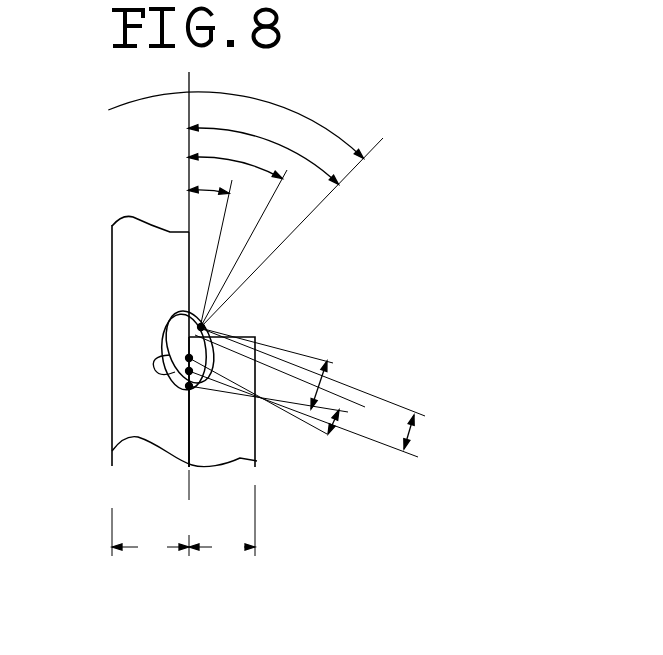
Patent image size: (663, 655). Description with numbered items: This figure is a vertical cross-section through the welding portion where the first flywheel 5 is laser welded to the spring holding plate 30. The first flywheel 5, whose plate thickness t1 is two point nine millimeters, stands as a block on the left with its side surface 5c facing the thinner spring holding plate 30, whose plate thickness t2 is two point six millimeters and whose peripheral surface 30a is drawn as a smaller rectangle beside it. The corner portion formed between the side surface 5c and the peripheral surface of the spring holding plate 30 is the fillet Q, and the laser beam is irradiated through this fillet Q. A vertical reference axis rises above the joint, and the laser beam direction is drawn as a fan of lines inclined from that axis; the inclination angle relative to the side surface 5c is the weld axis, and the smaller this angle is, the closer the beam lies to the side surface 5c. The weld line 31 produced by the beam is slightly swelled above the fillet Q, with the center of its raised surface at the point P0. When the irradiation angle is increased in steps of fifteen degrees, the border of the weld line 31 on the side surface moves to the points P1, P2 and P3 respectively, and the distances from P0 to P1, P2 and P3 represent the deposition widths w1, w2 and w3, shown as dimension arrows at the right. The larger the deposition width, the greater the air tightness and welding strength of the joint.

The side surface 5c is at (191, 262).
The first flywheel 5 is at (172, 442).
The spring holding plate 30 is at (202, 472).
The inclined face of pressing portion 30a is at (238, 452).
The weld line 31 is at (186, 389).
The fillet Q is at (164, 334).
The center point of the weld line surface P0 is at (203, 327).
The weld line border point P1 is at (187, 390).
The weld line border point P2 is at (189, 371).
The weld line border point P3 is at (189, 358).
The deposition width w1 is at (318, 383).
The deposition width w2 is at (414, 428).
The deposition width w3 is at (336, 412).
The thickness t1 is at (150, 518).
The thickness t2 is at (222, 525).